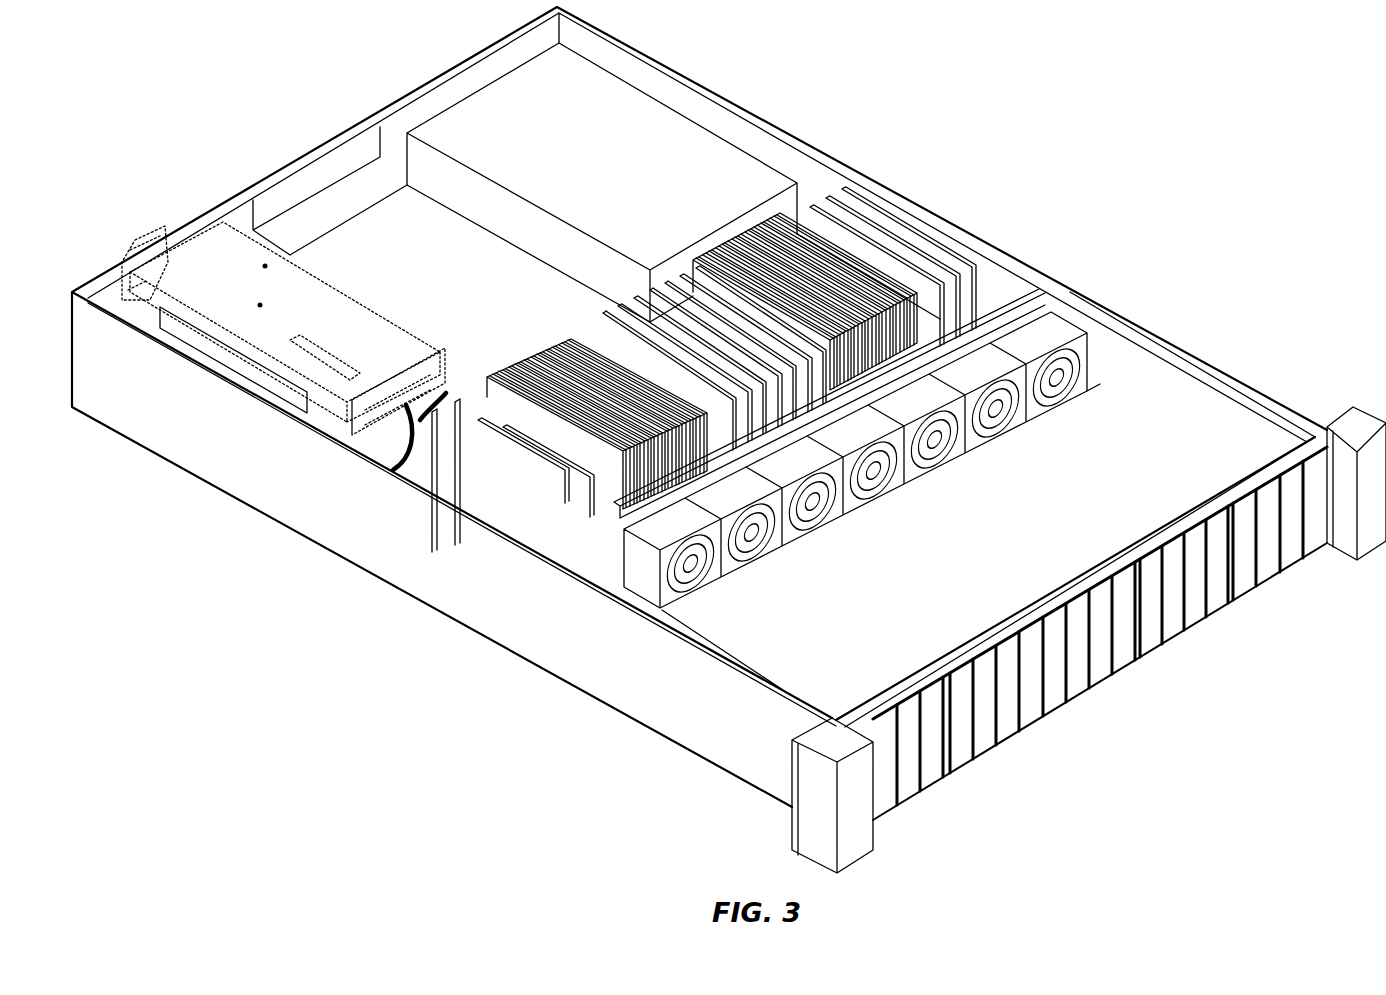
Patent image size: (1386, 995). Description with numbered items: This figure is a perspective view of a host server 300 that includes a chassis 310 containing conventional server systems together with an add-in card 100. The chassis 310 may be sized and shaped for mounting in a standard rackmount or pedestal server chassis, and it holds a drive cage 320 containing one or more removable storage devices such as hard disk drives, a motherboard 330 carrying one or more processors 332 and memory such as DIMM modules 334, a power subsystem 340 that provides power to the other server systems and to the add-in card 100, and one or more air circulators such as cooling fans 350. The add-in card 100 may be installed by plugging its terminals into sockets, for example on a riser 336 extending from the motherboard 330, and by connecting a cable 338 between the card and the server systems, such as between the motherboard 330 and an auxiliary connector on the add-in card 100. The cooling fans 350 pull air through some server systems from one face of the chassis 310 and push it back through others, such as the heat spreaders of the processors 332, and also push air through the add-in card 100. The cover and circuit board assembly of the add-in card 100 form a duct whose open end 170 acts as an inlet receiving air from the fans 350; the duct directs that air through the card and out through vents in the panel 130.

The host server 300 is at (1089, 92).
The chassis 310 is at (505, 589).
The drive cage 320 is at (975, 572).
The motherboard 330 is at (921, 300).
The processors 332 is at (793, 212).
The DIMM modules 334 is at (866, 232).
The riser 336 is at (232, 362).
The cable 338 is at (392, 452).
The power subsystem 340 is at (615, 190).
The cooling fans 350 is at (1048, 320).
The add-in card 100 is at (322, 306).
The panel 130 is at (138, 285).
The open end 170 is at (457, 378).